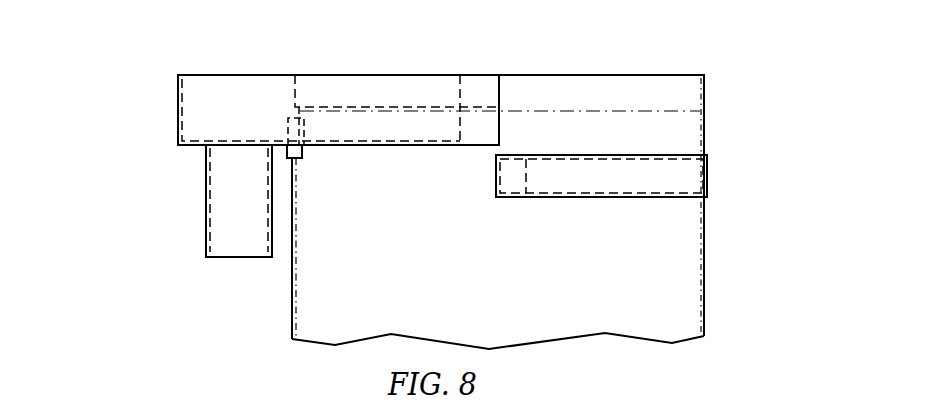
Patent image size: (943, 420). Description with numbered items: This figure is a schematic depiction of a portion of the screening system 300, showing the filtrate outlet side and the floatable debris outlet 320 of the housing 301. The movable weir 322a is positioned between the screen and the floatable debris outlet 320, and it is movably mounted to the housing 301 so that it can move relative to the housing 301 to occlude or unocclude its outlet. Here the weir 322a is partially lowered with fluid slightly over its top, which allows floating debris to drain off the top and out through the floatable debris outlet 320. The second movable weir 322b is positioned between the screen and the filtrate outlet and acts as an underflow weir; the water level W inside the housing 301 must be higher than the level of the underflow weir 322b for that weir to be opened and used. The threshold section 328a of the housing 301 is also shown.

The screening system 300 is at (741, 104).
The housing 301 is at (700, 229).
The floatable debris outlet 320 is at (213, 220).
The movable weir 322a is at (283, 122).
The movable weir 322b is at (684, 174).
The threshold section of the housing 328a is at (178, 108).
The water level W is at (545, 111).